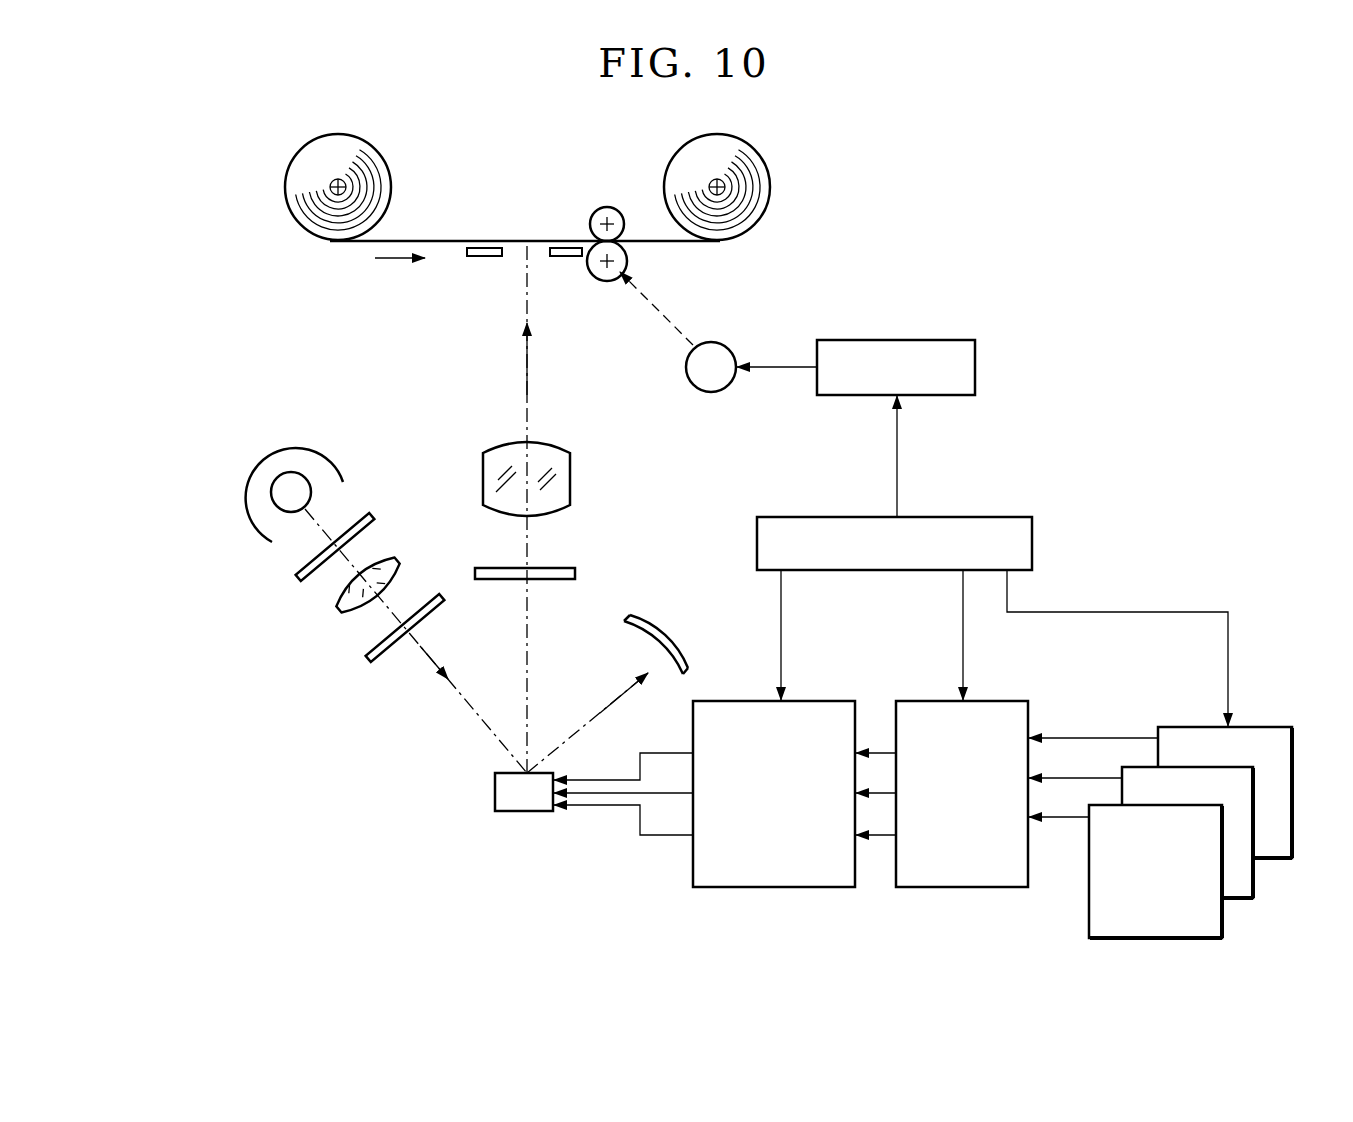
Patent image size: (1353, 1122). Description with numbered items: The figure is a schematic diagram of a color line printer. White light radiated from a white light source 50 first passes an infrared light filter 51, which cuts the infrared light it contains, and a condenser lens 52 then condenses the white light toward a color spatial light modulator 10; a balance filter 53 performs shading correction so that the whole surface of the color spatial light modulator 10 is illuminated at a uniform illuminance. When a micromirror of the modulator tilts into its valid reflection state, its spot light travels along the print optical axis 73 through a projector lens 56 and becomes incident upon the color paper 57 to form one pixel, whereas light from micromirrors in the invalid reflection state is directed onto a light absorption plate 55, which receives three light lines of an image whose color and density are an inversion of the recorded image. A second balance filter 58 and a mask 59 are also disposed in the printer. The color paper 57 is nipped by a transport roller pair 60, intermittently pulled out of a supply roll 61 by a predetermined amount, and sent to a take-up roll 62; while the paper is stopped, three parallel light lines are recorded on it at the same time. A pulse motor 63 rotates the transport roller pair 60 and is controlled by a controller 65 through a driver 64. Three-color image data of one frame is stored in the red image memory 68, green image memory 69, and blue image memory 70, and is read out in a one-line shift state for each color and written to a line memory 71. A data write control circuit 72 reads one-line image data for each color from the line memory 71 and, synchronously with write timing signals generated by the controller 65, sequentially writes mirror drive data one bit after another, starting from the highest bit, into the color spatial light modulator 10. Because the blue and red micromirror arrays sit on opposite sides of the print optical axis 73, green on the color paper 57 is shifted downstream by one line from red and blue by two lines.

The color spatial light modulator 10 is at (527, 812).
The white light source 50 is at (291, 472).
The infrared light filter 51 is at (362, 515).
The condenser lens 52 is at (395, 555).
The balance filter 53 is at (385, 658).
The light absorption plate 55 is at (668, 628).
The projector lens 56 is at (555, 445).
The color paper 57 is at (485, 238).
The balance filter 58 is at (560, 568).
The mask 59 is at (485, 258).
The transport roller pair 60 is at (614, 282).
The supply roll 61 is at (383, 138).
The take-up roll 62 is at (748, 147).
The pulse motor 63 is at (717, 342).
The driver 64 is at (898, 340).
The controller 65 is at (964, 517).
The red image memory 68 is at (1224, 920).
The green image memory 69 is at (1256, 878).
The blue image memory 70 is at (1268, 727).
The line memory 71 is at (1022, 701).
The data write control circuit 72 is at (845, 701).
The print optical axis 73 is at (527, 645).